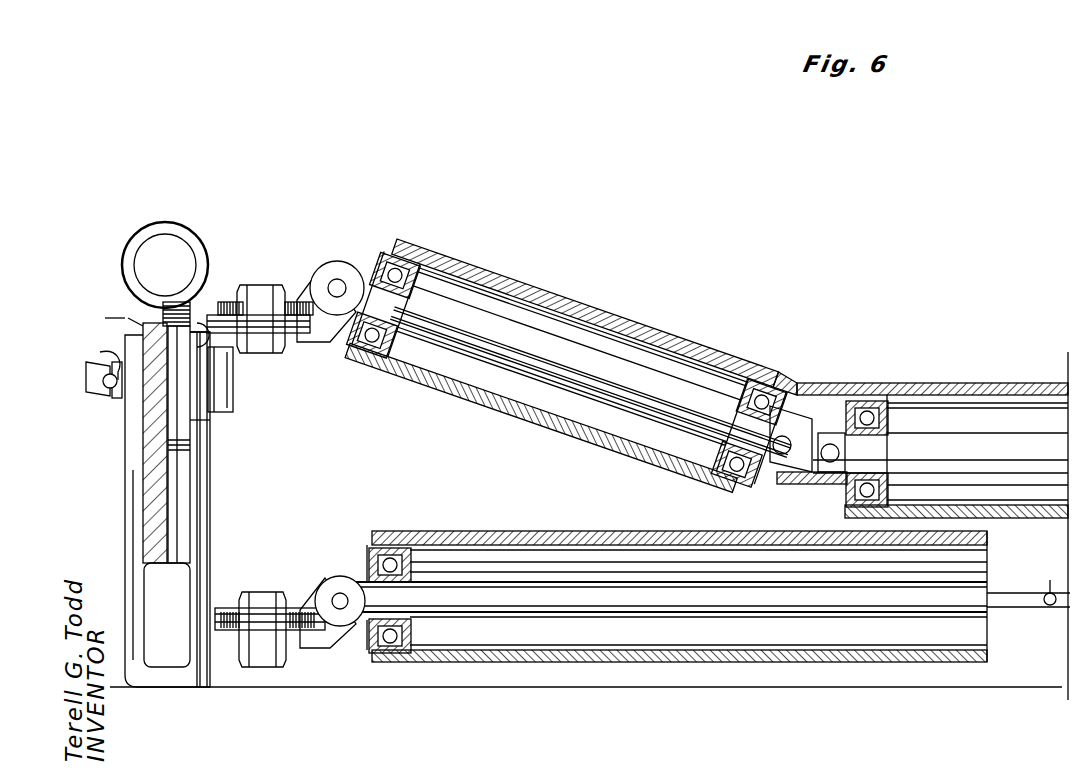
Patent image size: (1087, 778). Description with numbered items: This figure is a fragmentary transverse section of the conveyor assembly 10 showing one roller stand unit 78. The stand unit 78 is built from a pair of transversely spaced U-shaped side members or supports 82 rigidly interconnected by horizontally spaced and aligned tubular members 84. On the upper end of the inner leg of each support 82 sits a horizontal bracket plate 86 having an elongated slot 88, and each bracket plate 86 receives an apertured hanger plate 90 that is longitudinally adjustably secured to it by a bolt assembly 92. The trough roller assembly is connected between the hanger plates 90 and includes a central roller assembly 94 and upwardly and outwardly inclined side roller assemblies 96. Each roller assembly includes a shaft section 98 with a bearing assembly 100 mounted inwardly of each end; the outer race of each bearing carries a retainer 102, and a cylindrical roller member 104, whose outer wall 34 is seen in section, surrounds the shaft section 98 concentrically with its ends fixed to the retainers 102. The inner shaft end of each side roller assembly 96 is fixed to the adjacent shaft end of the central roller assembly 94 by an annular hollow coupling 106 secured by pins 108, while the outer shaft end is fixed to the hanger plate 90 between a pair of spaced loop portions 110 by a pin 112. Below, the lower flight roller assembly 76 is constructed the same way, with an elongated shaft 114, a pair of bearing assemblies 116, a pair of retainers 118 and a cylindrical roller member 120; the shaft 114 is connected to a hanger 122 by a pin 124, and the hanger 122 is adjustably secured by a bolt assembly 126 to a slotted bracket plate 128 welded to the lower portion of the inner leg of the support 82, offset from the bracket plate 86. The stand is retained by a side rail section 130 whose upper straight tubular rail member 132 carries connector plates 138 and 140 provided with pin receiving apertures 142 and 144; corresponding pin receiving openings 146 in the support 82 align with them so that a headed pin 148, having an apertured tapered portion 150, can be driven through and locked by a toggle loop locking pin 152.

The folding table assembly 10 is at (516, 236).
The outer tube wall 34 is at (700, 348).
The lower flight roller assembly 76 is at (535, 525).
The roller stand unit 78 is at (108, 318).
The U-shaped side member 82 is at (212, 518).
The tubular member 84 is at (1050, 606).
The horizontal bracket plate 86 is at (295, 340).
The elongated slot 88 is at (269, 334).
The hanger plate 90 is at (205, 300).
The bolt assembly 92 is at (262, 285).
The central roller assembly 94 is at (1020, 380).
The inclined side roller assembly 96 is at (602, 302).
The shaft section 98 is at (578, 380).
The bearing assembly 100 is at (380, 340).
The retainer 102 is at (712, 462).
The cylindrical roller member 104 is at (516, 418).
The annular hollow coupling 106 is at (765, 480).
The pin 108 is at (783, 437).
The loop portion 110 is at (360, 268).
The pin 112 is at (338, 279).
The elongated shaft 114 is at (748, 600).
The bearing assembly 116 is at (412, 634).
The retainer 118 is at (368, 548).
The cylindrical roller member 120 is at (812, 662).
The hanger 122 is at (325, 628).
The pin 124 is at (340, 580).
The bolt assembly 126 is at (258, 590).
The slotted bracket plate 128 is at (225, 687).
The side rail section 130 is at (192, 226).
The upper straight tubular rail member 132 is at (138, 242).
The connector plate 138 is at (178, 438).
The connector plate 140 is at (150, 441).
The pin receiving aperture 142 is at (212, 421).
The pin receiving aperture 144 is at (138, 322).
The pin receiving opening 146 is at (88, 385).
The headed pin 148 is at (235, 393).
The apertured tapered portion 150 is at (100, 352).
The toggle loop locking pin 152 is at (97, 365).